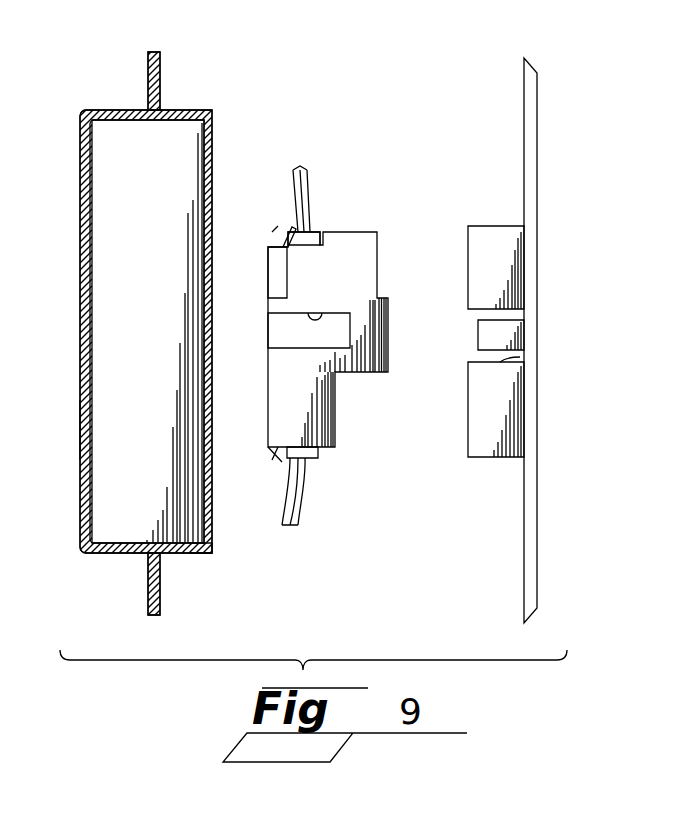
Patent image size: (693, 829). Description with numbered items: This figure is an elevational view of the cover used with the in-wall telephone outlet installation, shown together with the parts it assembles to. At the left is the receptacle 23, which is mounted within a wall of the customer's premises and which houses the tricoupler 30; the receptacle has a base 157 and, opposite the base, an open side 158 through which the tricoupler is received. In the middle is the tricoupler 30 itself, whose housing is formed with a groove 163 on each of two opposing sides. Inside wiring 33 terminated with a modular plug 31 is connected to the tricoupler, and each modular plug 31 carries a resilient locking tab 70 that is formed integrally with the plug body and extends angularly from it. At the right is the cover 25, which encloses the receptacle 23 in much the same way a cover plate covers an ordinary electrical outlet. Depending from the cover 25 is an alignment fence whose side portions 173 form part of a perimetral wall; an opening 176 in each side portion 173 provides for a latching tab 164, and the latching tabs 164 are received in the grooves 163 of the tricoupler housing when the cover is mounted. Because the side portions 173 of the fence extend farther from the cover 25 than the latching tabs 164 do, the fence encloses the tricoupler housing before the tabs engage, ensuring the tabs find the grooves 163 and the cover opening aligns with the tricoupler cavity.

The receptacle 23 is at (82, 108).
The base 157 is at (80, 428).
The open side 158 is at (214, 540).
The tricoupler 30 is at (358, 230).
The groove 163 is at (315, 320).
The modular plug 31 is at (298, 242).
The resilient locking tab 70 is at (268, 232).
The inside wiring 33 is at (308, 184).
The cover 25 is at (537, 500).
The side portion 173 is at (510, 255).
The latching tab 164 is at (515, 333).
The opening 176 is at (500, 360).